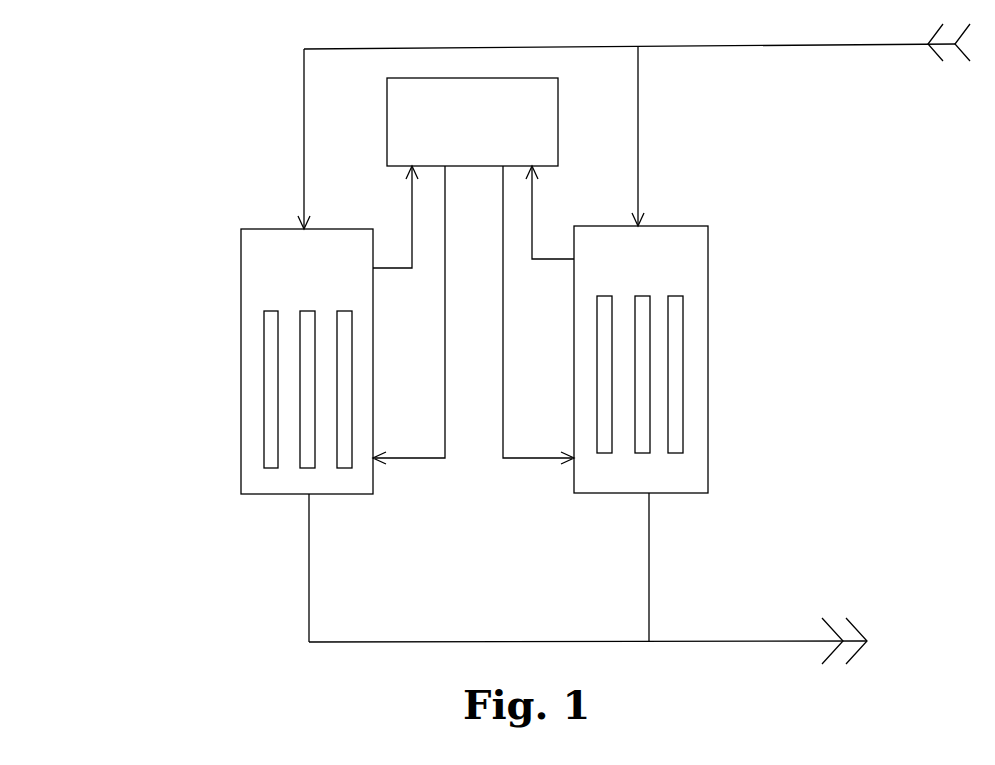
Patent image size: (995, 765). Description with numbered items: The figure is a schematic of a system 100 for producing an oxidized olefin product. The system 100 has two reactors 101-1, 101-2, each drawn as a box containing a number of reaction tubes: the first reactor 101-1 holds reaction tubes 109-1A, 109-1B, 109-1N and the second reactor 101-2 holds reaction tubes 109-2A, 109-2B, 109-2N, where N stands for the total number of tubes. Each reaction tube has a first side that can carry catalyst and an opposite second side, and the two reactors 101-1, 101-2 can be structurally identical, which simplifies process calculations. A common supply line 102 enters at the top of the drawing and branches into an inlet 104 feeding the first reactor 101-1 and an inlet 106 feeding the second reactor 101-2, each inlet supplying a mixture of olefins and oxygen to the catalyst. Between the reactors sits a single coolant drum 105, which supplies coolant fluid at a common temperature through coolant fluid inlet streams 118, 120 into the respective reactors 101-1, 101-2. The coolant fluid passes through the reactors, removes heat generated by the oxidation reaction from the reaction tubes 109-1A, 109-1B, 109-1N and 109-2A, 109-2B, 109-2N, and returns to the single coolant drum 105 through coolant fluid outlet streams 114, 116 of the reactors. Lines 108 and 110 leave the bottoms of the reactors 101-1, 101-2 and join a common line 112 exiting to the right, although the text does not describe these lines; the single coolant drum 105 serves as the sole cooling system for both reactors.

The system 100 is at (123, 132).
The reactor 101-1 is at (330, 256).
The reactor 101-2 is at (665, 253).
The common supply line 102 is at (817, 45).
The inlet 104 is at (304, 100).
The single coolant drum 105 is at (489, 108).
The inlet 106 is at (638, 118).
The first outlet line 108 is at (309, 553).
The reaction tube 109-1A is at (264, 338).
The reaction tube 109-1B is at (306, 310).
The reaction tube 109-1N is at (352, 340).
The reaction tube 109-2A is at (597, 312).
The reaction tube 109-2B is at (644, 295).
The reaction tube 109-2N is at (683, 311).
The second outlet line 110 is at (649, 552).
The outlet line 112 is at (770, 642).
The coolant fluid outlet stream 114 is at (412, 218).
The coolant fluid outlet stream 116 is at (532, 222).
The coolant fluid inlet stream 118 is at (445, 390).
The coolant fluid inlet stream 120 is at (503, 395).